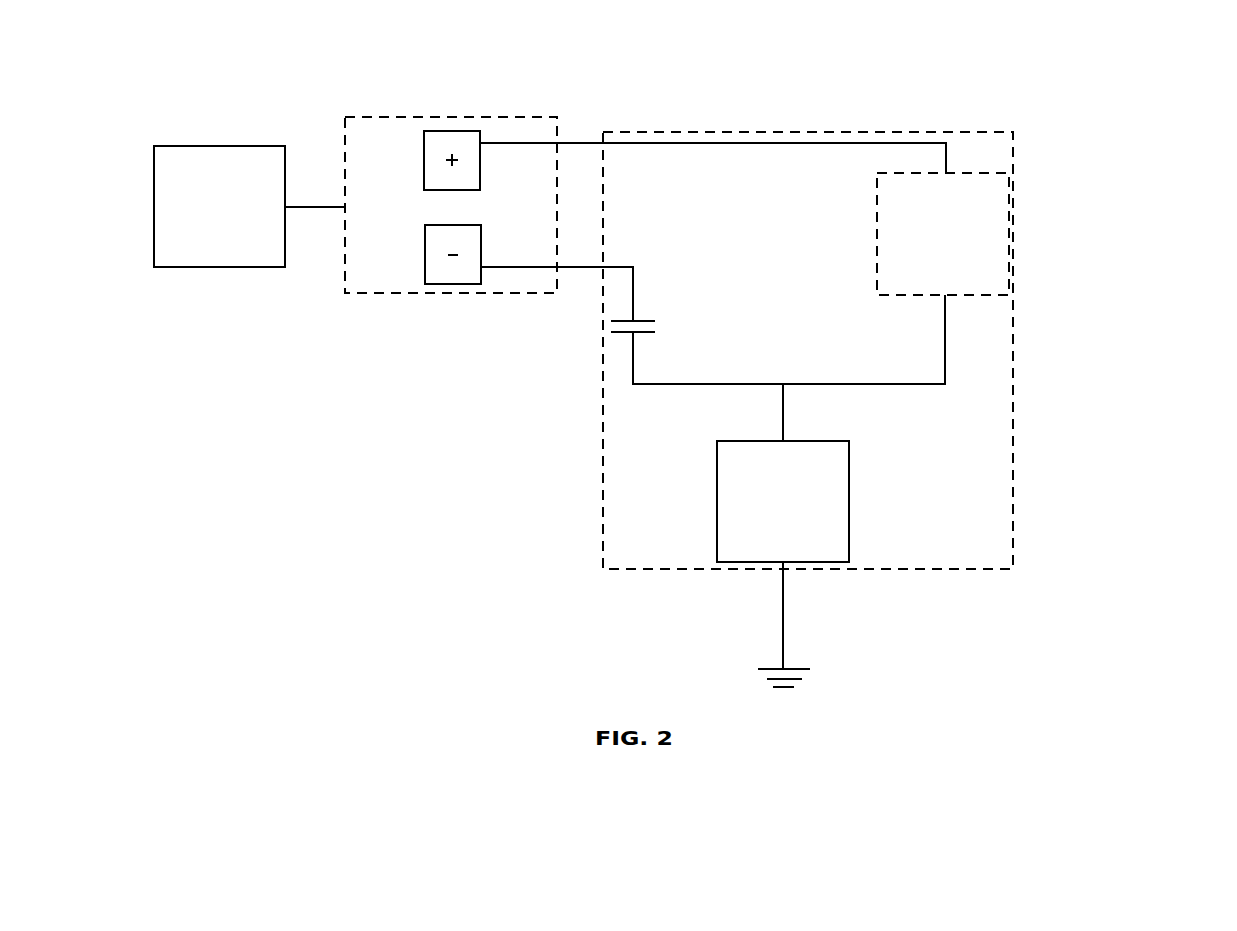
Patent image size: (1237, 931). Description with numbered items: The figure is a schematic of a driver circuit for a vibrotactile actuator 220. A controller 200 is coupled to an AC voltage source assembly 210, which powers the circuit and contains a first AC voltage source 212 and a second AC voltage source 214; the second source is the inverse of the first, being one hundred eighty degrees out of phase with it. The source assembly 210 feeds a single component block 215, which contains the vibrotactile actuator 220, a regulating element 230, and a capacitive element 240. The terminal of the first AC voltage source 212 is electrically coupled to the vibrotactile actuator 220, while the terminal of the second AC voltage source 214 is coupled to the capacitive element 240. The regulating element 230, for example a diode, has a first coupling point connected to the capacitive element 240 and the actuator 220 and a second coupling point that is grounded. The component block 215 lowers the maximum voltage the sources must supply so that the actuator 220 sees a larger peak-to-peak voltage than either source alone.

The controller 200 is at (218, 147).
The AC voltage source assembly 210 is at (418, 117).
The first AC voltage source 212 is at (470, 131).
The second AC voltage source 214 is at (458, 284).
The component block 215 is at (897, 132).
The vibrotactile actuator 220 is at (1107, 293).
The regulating element 230 is at (849, 503).
The capacitive element 240 is at (628, 334).